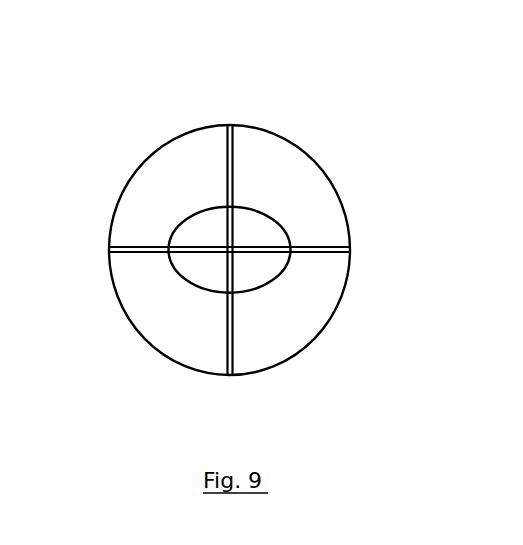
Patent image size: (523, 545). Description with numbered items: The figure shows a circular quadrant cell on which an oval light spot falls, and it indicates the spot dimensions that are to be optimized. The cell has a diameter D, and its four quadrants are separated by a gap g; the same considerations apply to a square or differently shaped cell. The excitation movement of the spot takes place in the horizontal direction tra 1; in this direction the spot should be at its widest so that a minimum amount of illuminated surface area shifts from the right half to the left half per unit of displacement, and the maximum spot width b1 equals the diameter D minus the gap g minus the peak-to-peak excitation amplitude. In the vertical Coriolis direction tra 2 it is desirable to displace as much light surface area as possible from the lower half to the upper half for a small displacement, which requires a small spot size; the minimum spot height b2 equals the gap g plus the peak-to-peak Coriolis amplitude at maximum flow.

The diameter D is at (110, 207).
The spot width (excitation) b1 is at (169, 225).
The spot width (Coriolis) b2 is at (198, 206).
The gap g is at (197, 335).
The excitation movement direction tra 1 is at (167, 420).
The Coriolis direction tra 2 is at (408, 205).